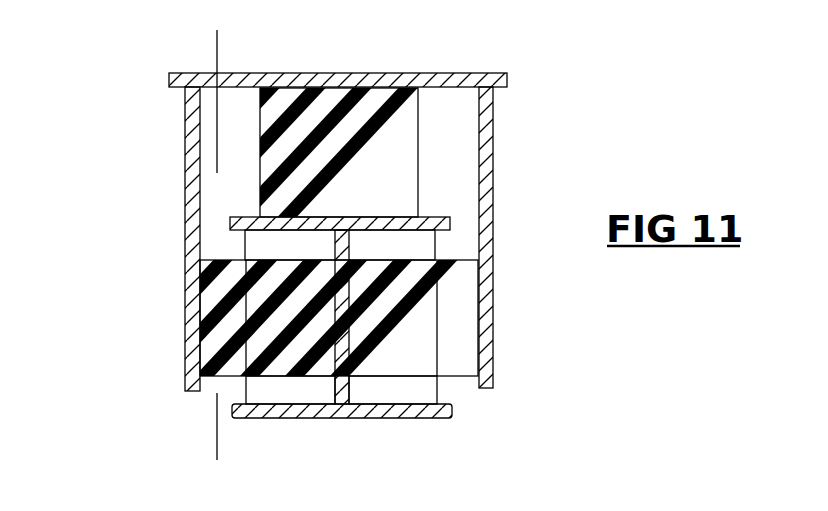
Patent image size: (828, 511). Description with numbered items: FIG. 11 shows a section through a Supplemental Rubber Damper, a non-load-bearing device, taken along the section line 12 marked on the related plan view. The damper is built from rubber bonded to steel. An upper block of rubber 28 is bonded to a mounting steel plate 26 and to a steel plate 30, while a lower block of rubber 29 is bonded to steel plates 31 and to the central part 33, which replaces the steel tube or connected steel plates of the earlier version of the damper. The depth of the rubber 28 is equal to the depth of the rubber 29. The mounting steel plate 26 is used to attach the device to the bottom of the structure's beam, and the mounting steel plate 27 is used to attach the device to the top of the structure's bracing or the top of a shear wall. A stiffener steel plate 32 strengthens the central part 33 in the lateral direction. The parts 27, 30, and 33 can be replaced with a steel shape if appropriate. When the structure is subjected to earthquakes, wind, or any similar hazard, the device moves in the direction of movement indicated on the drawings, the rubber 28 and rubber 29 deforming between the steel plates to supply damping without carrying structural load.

The section line 12- 12 is at (275, 31).
The mounting steel plate 26 is at (347, 50).
The mounting steel plate 27 is at (365, 359).
The rubber 28 is at (304, 124).
The rubber 29 is at (300, 355).
The steel plate 30 is at (415, 310).
The steel plates 31 is at (322, 239).
The stiffener steel plate 32 is at (328, 342).
The steel part replacing the steel tube 33 is at (290, 264).